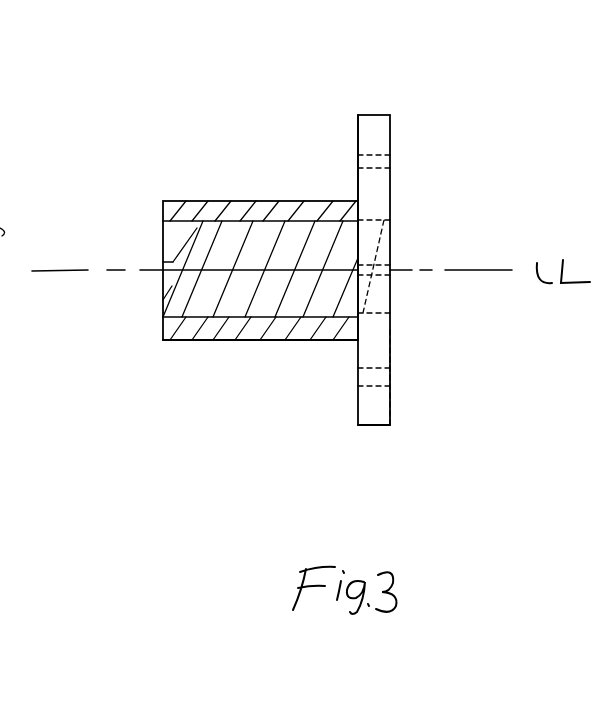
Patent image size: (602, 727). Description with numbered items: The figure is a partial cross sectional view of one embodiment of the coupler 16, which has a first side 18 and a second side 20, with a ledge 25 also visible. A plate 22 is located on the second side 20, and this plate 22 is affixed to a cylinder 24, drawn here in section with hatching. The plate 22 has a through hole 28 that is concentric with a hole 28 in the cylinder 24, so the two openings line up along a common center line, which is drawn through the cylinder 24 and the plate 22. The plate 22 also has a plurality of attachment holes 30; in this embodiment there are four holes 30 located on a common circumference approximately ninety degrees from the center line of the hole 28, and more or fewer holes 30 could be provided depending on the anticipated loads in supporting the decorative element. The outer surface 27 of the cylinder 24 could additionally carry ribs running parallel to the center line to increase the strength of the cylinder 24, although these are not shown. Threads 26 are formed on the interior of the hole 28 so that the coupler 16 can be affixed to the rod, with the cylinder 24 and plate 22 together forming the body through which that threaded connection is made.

The coupler 16 is at (385, 109).
The first side 18 is at (158, 328).
The second side 20 is at (391, 405).
The plate 22 is at (365, 427).
The cylinder 24 is at (195, 198).
The ledge 25 is at (357, 155).
The threads 26 is at (172, 297).
The outer surface 27 is at (235, 342).
The hole 28 is at (394, 246).
The attachment holes 30 is at (390, 157).